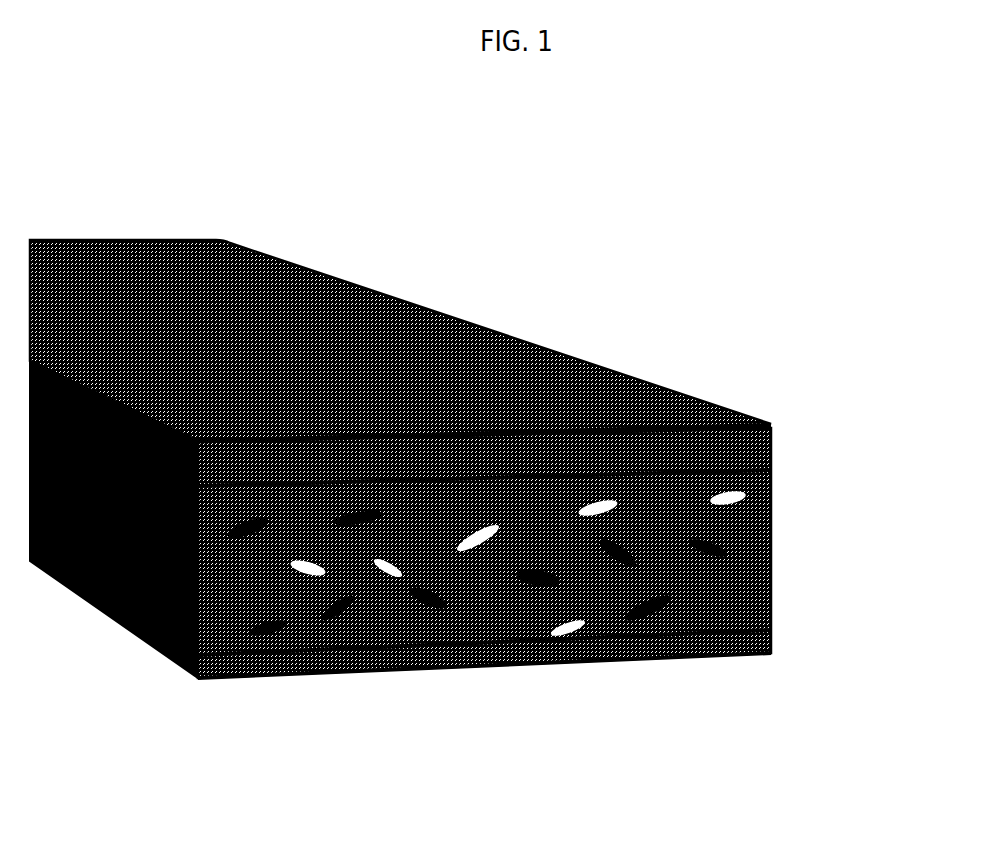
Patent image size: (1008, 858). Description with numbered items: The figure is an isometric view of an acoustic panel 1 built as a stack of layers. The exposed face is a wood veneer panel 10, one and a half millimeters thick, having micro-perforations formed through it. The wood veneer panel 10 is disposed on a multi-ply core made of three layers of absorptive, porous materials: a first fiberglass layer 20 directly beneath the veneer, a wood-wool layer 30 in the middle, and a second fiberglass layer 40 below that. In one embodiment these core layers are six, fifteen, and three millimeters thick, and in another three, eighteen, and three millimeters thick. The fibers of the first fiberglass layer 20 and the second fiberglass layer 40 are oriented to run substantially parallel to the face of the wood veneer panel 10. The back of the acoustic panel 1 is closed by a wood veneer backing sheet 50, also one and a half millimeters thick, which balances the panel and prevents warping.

The acoustic panel 1 is at (856, 208).
The wood veneer panel 10 is at (612, 376).
The first fiberglass layer 20 is at (794, 447).
The wood-wool layer 30 is at (794, 527).
The second fiberglass layer 40 is at (796, 625).
The wood veneer backing sheet 50 is at (772, 663).